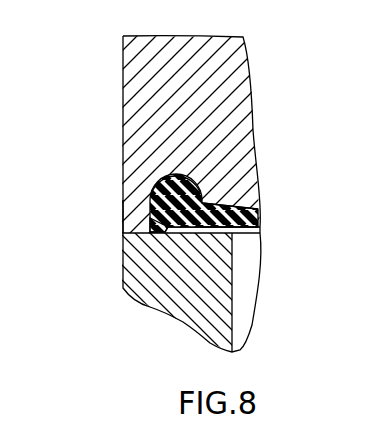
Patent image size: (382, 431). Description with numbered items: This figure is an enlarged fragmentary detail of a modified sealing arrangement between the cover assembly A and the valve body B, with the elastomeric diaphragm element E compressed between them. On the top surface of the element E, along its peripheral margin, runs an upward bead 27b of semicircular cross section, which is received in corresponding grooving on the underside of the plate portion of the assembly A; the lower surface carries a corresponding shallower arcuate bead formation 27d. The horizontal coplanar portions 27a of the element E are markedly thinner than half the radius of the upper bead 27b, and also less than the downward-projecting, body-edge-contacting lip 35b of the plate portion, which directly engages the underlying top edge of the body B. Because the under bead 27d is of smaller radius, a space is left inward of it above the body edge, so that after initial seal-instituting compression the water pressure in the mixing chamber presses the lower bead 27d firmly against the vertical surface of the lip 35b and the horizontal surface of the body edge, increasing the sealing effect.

The assembly A is at (113, 133).
The body B is at (119, 281).
The element E is at (146, 188).
The horizontal coplanar portions 27a is at (238, 215).
The upward bead 27b is at (170, 175).
The arcuate bead formation 27d is at (158, 232).
The lip 35b is at (121, 212).